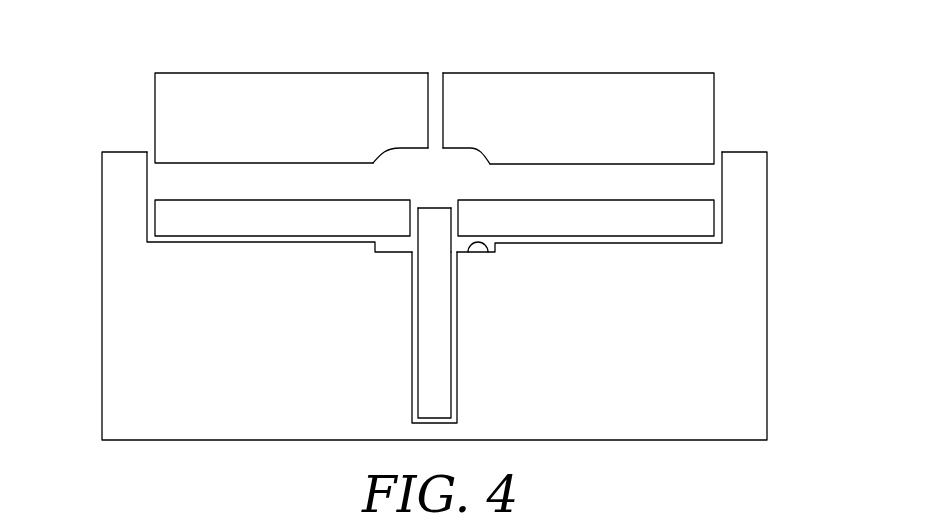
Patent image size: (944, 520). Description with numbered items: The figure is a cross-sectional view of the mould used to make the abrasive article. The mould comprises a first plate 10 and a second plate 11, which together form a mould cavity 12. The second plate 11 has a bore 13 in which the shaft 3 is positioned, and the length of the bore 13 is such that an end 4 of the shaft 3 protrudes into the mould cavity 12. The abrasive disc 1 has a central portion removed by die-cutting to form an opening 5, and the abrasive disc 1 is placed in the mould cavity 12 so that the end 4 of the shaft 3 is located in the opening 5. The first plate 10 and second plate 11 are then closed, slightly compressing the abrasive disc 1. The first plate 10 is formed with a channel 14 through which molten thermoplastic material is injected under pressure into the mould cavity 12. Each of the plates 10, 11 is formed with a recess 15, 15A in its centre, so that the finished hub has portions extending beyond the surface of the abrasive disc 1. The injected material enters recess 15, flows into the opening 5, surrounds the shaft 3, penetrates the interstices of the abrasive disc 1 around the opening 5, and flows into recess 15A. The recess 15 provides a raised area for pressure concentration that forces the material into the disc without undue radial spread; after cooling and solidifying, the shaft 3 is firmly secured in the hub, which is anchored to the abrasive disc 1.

The abrasive disc 1 is at (284, 230).
The shaft 3 is at (445, 318).
The end of the shaft 4 is at (433, 217).
The opening 5 is at (450, 207).
The first plate 10 is at (223, 90).
The second plate 11 is at (128, 312).
The mould cavity 12 is at (172, 182).
The bore 13 is at (413, 344).
The channel 14 is at (441, 95).
The recess 15 is at (400, 147).
The recess 15A is at (485, 248).